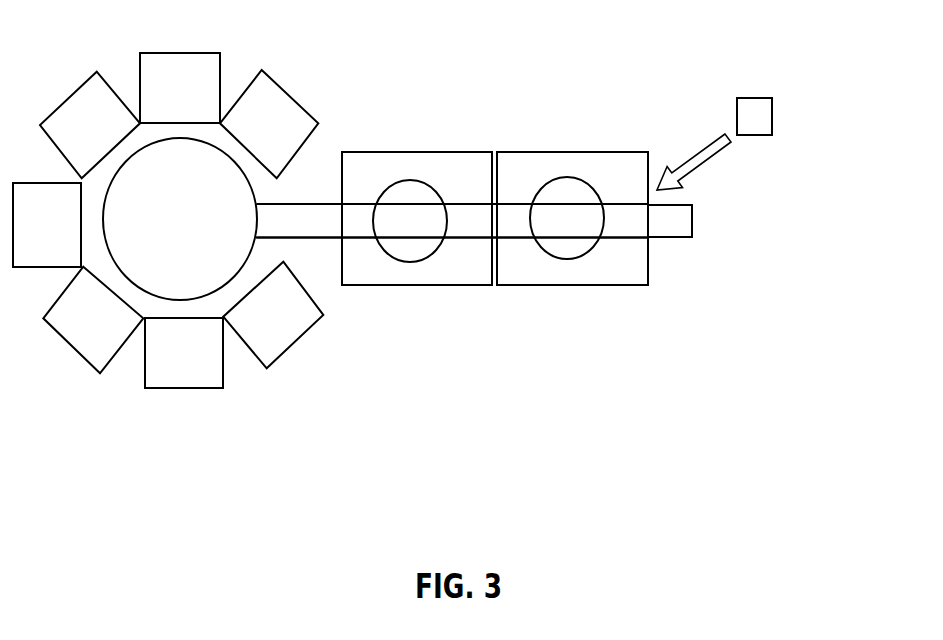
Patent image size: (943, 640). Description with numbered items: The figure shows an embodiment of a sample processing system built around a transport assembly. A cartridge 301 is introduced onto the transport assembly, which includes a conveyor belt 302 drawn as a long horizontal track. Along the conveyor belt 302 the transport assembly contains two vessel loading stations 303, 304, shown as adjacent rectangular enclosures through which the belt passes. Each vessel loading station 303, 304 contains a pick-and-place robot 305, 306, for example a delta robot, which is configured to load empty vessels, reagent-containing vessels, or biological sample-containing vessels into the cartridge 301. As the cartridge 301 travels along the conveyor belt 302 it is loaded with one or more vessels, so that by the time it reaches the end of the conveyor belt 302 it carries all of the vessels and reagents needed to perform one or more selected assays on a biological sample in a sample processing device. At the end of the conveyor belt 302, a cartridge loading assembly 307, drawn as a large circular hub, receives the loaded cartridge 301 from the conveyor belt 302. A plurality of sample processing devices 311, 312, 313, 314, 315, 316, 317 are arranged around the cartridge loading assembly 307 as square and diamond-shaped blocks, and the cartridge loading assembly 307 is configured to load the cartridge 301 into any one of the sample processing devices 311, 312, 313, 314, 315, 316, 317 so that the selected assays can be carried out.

The cartridge 301 is at (776, 71).
The conveyor belt 302 is at (498, 268).
The vessel loading station 303 is at (417, 172).
The vessel loading station 304 is at (572, 172).
The pick-and-place robot 305 is at (428, 176).
The pick-and-place robot 306 is at (583, 175).
The cartridge loading assembly 307 is at (180, 219).
The sample processing device 311 is at (269, 124).
The sample processing device 312 is at (180, 88).
The sample processing device 313 is at (90, 125).
The sample processing device 314 is at (47, 225).
The sample processing device 315 is at (93, 320).
The sample processing device 316 is at (184, 353).
The sample processing device 317 is at (273, 315).